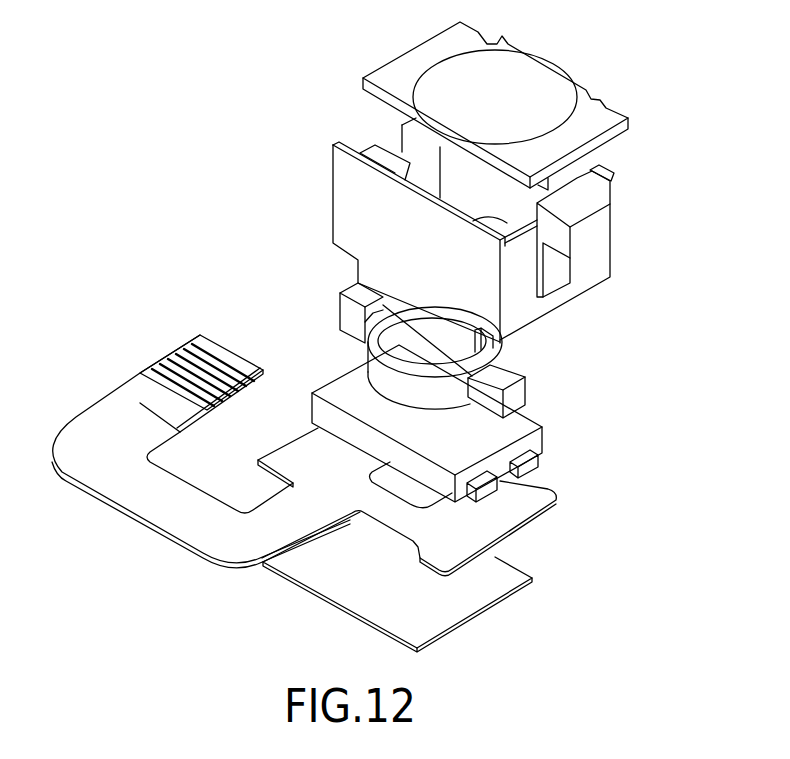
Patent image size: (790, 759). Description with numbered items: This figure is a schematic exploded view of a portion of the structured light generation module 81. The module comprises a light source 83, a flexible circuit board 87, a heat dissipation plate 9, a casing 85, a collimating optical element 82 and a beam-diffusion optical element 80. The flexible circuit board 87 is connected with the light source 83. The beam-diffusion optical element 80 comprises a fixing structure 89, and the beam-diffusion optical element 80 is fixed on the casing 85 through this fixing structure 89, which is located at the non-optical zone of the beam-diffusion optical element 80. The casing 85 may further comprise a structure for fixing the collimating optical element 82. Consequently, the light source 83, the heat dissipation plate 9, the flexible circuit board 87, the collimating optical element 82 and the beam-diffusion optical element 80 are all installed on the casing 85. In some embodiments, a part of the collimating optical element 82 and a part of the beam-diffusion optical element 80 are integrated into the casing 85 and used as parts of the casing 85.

The structured light generation module 81 is at (215, 64).
The beam-diffusion optical element 80 is at (420, 60).
The casing 85 is at (590, 276).
The fixing structure 89 is at (566, 170).
The collimating optical element 82 is at (510, 376).
The light source 83 is at (350, 385).
The flexible circuit board 87 is at (533, 506).
The heat dissipation plate 9 is at (502, 577).